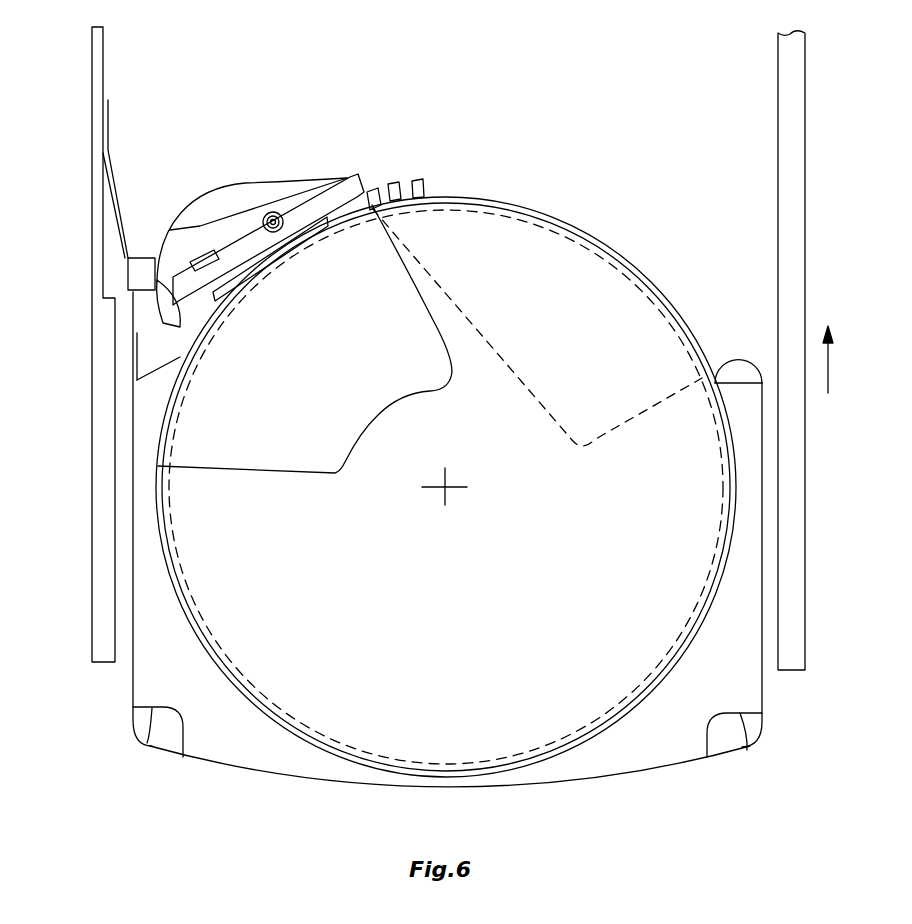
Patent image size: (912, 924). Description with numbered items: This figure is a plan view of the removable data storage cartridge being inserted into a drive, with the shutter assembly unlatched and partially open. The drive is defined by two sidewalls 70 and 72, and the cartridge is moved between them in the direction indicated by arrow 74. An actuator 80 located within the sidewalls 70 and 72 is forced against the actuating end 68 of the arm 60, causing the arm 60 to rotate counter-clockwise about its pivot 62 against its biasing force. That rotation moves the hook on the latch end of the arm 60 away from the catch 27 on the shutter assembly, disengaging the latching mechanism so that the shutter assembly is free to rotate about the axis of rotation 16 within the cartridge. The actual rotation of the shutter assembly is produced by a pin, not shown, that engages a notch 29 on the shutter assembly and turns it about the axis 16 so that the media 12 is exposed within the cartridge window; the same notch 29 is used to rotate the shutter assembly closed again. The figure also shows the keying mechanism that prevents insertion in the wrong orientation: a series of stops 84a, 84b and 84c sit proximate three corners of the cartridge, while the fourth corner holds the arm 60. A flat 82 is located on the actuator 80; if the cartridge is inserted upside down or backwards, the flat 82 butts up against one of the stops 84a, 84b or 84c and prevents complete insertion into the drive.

The media 12 is at (190, 422).
The axis of rotation 16 is at (447, 489).
The catch 27 is at (370, 194).
The notch 29 is at (406, 182).
The arm 60 is at (181, 253).
The pivot 62 is at (271, 212).
The actuating end 68 is at (137, 333).
The sidewall 70 is at (92, 483).
The sidewall 72 is at (806, 487).
The arrow 74 is at (830, 367).
The actuator 80 is at (137, 267).
The flat 82 is at (142, 293).
The stop 84a is at (728, 382).
The stop 84b is at (747, 750).
The stop 84c is at (147, 743).